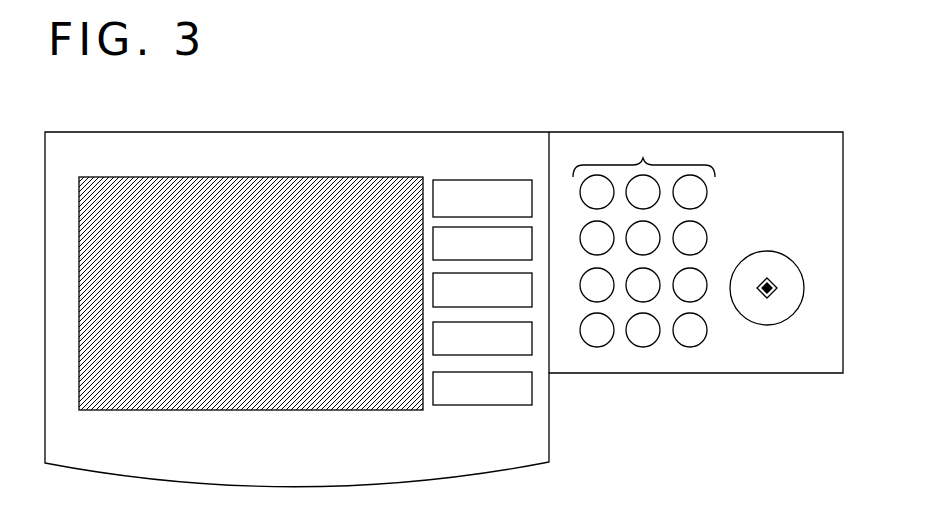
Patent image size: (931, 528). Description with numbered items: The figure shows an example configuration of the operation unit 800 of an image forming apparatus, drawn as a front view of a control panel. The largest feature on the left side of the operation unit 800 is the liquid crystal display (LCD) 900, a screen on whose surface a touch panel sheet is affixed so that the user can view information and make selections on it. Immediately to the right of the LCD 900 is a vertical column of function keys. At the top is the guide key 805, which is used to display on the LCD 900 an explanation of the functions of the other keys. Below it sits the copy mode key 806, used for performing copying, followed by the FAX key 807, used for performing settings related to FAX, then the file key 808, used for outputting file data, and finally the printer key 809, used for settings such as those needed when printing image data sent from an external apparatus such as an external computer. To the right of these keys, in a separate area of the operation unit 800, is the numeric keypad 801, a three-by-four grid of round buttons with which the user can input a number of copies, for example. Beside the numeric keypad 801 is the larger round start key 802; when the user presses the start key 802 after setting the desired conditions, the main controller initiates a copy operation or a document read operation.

The operation unit 800 is at (202, 132).
The liquid crystal display (LCD) 900 is at (272, 410).
The guide key 805 is at (462, 180).
The copy mode key 806 is at (536, 247).
The FAX key 807 is at (532, 290).
The file key 808 is at (532, 340).
The printer key 809 is at (486, 405).
The numeric keypad 801 is at (643, 160).
The start key 802 is at (784, 256).